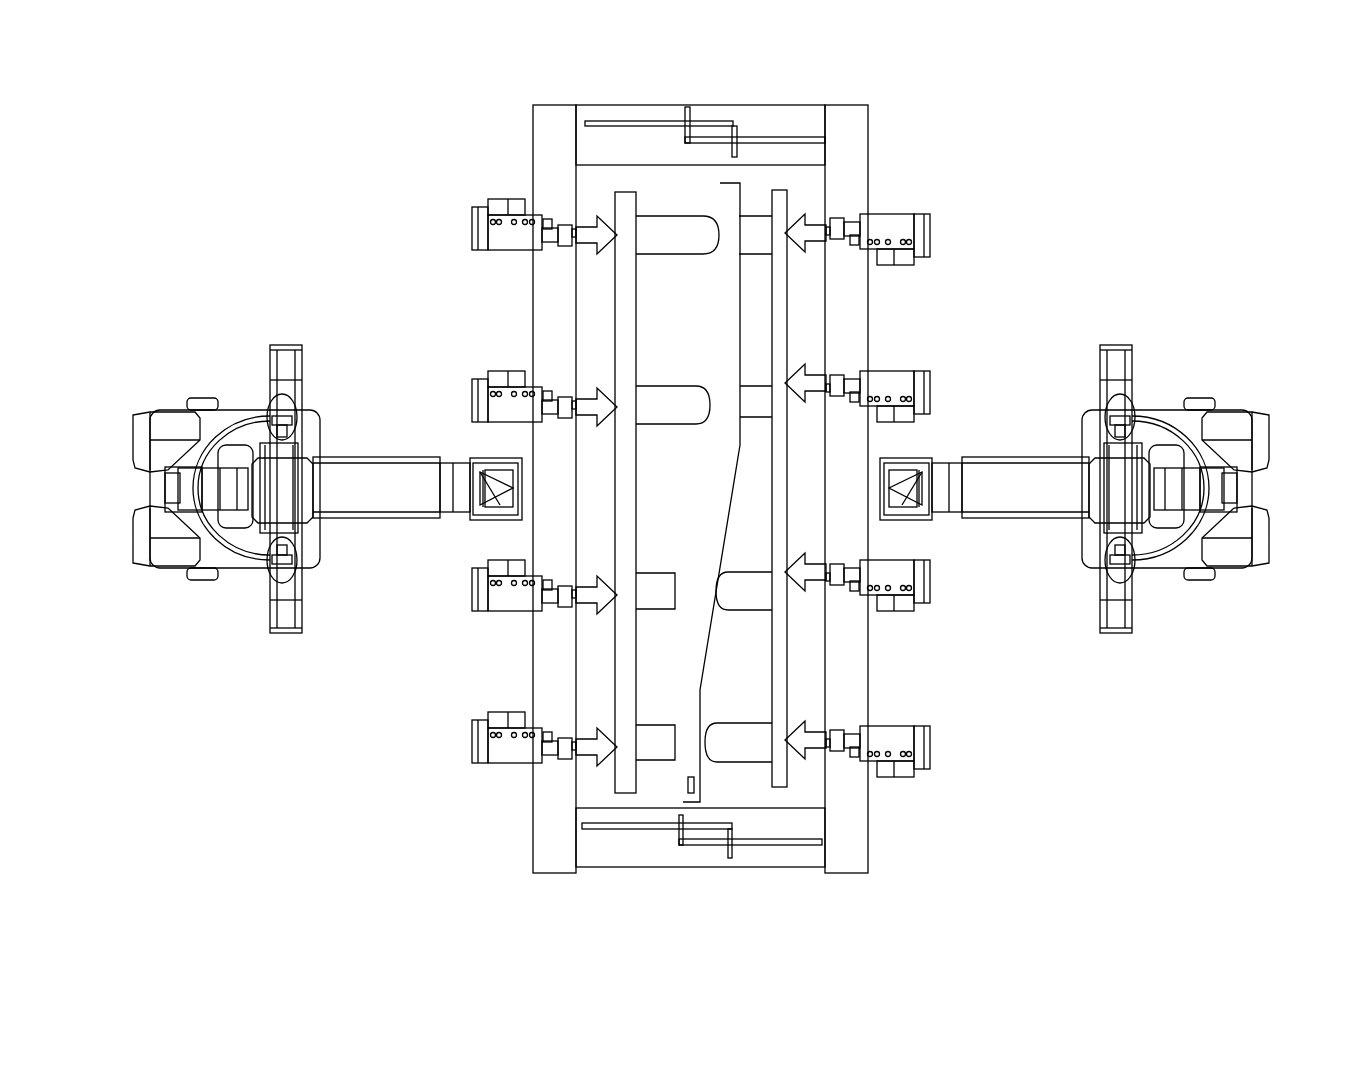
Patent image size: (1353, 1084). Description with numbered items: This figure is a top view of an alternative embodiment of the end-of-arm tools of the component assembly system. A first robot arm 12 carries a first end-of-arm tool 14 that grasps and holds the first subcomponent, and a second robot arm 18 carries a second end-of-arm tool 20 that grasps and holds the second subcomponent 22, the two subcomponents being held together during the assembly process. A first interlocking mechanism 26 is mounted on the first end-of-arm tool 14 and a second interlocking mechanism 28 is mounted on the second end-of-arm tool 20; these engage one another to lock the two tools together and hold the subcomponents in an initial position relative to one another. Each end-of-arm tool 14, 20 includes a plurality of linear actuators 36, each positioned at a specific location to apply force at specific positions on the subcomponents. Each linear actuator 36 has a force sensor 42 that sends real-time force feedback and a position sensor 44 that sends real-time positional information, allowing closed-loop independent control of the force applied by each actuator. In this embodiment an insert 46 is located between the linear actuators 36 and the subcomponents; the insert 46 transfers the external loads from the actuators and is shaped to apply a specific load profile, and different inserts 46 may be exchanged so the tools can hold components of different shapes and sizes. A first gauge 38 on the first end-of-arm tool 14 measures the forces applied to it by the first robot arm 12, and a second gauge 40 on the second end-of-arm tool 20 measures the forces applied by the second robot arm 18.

The first robot arm 12 is at (327, 489).
The first end-of-arm tool 14 is at (535, 853).
The second robot arm 18 is at (1074, 489).
The second end-of-arm tool 20 is at (862, 285).
The second subcomponent 22 is at (707, 650).
The first interlocking mechanism 26 is at (640, 121).
The second interlocking mechanism 28 is at (765, 138).
The linear actuator 36 is at (495, 235).
The first gauge 38 is at (473, 513).
The second gauge 40 is at (888, 470).
The force sensor 42 is at (502, 205).
The position sensor 44 is at (548, 218).
The insert 46 is at (625, 295).